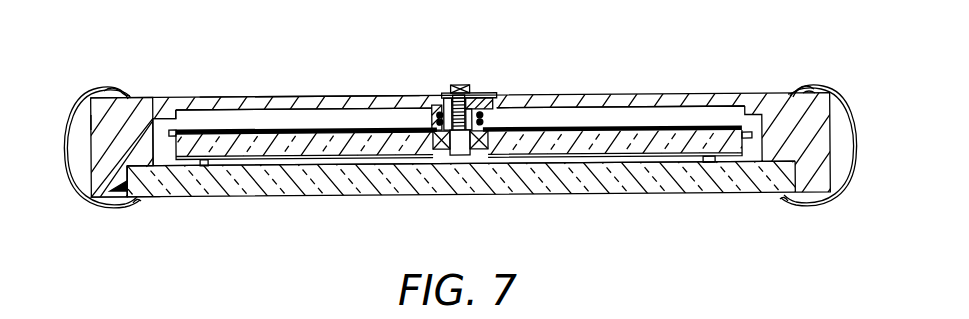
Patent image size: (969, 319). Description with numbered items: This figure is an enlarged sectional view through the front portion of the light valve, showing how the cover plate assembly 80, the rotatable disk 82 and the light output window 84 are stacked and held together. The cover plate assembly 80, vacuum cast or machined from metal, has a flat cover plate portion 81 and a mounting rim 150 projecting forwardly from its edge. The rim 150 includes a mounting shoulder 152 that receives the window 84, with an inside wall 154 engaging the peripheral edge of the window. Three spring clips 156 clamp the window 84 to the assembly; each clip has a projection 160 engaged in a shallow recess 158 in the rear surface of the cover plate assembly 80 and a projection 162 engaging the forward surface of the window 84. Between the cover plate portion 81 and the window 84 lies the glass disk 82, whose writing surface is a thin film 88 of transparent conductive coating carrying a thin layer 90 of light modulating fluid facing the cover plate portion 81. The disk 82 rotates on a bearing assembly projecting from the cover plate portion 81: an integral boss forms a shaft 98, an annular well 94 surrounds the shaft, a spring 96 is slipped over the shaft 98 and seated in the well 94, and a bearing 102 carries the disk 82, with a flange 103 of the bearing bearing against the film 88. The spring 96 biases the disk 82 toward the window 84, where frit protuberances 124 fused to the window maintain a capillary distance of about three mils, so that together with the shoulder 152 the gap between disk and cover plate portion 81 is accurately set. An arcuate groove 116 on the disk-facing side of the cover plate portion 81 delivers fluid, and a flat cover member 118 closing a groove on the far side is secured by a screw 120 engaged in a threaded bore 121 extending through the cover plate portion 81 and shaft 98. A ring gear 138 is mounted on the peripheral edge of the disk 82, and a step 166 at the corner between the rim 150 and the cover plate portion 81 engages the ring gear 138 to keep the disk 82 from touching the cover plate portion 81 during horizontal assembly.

The cover plate assembly 80 is at (298, 94).
The cover plate portion 81 is at (337, 98).
The rotatable disk 82 is at (617, 148).
The light output window 84 is at (655, 183).
The thin film 88 is at (265, 132).
The thin layer of light modulating fluid 90 is at (215, 126).
The annular recess or well 94 is at (433, 108).
The spring 96 is at (481, 120).
The shaft 98 is at (462, 154).
The bearing 102 is at (487, 141).
The flange 103 is at (432, 138).
The arcuate groove 116 is at (554, 106).
The cover member 118 is at (488, 98).
The screw 120 is at (468, 88).
The threaded bore 121 is at (449, 92).
The frit dots or protuberances 124 is at (207, 164).
The ring gear 138 is at (170, 143).
The mounting rim 150 is at (115, 143).
The mounting shoulder 152 is at (155, 189).
The inside wall 154 is at (118, 186).
The spring clips 156 is at (67, 124).
The shallow recess 158 is at (90, 122).
The projection 160 is at (112, 94).
The projection 162 is at (136, 206).
The step 166 is at (167, 117).